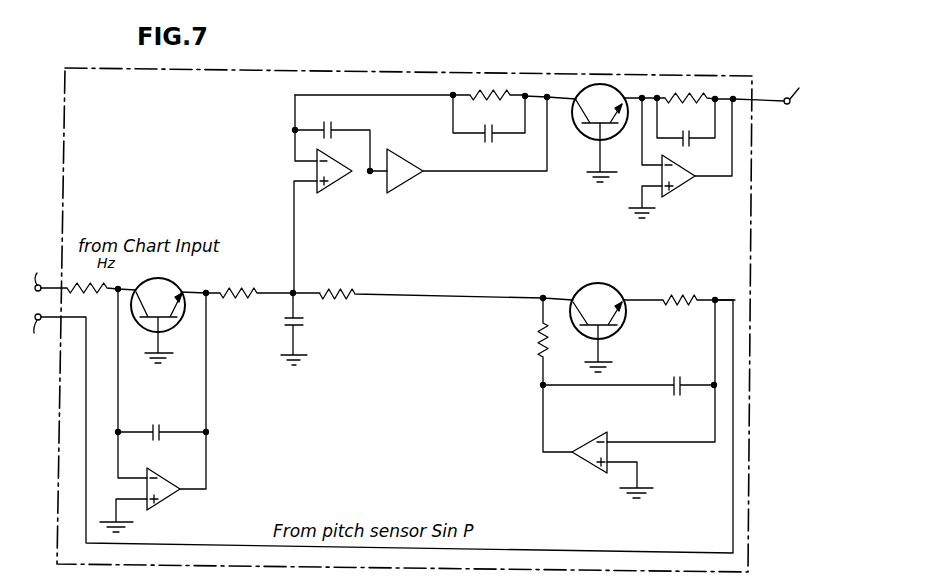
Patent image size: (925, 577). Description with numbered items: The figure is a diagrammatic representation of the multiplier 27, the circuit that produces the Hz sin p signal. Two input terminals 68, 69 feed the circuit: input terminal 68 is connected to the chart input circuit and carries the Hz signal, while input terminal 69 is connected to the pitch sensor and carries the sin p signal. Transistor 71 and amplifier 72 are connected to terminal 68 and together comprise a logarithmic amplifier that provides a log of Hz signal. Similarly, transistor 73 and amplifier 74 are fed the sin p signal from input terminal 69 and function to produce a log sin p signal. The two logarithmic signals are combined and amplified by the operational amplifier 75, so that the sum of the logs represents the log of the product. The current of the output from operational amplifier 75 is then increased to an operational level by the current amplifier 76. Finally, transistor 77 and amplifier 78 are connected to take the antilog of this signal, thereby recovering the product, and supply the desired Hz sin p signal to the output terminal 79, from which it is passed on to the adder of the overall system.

The multiplier 27 is at (322, 47).
The input terminal 68 is at (41, 266).
The input terminal 69 is at (41, 341).
The transistor 71 is at (177, 286).
The amplifier 72 is at (179, 494).
The transistor 73 is at (612, 287).
The amplifier 74 is at (587, 443).
The operational amplifier 75 is at (345, 166).
The current amplifier 76 is at (415, 165).
The transistor 77 is at (579, 131).
The amplifier 78 is at (688, 170).
The output terminal 79 is at (801, 88).